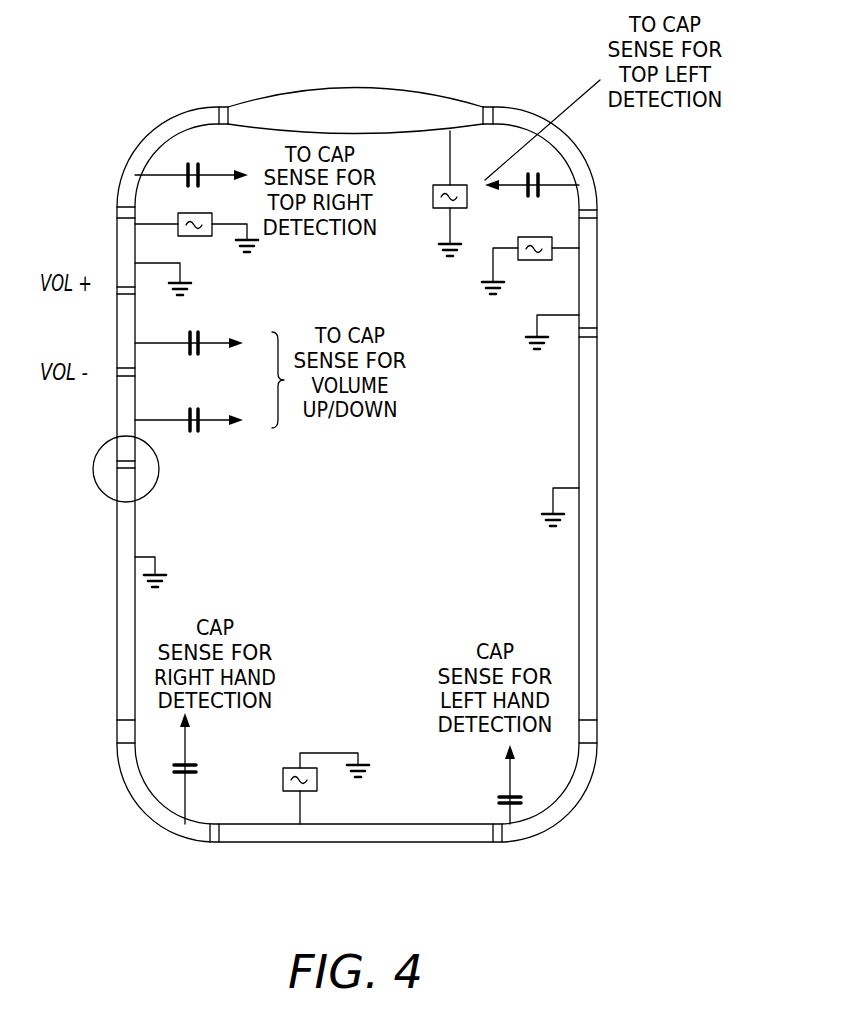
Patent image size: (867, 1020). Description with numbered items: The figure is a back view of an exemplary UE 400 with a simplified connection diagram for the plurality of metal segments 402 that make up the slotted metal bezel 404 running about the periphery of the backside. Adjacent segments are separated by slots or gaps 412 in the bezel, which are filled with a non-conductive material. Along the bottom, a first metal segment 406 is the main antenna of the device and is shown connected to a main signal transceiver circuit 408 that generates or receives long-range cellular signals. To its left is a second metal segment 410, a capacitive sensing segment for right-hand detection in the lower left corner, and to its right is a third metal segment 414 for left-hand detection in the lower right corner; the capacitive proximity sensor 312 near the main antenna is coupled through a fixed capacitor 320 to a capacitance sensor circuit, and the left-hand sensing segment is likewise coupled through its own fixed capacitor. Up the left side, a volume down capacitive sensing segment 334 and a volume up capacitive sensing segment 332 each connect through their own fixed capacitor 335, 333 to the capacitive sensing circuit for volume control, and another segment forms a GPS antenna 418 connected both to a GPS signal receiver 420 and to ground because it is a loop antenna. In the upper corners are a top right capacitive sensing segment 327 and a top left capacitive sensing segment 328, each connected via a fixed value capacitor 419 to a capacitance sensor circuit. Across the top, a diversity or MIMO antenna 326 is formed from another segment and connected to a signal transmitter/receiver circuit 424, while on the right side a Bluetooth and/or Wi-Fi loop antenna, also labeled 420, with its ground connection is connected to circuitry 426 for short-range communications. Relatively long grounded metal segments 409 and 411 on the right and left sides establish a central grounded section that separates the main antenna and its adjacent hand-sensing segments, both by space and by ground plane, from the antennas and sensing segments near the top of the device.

The UE 400 is at (695, 178).
The diversity antenna or MIMO antenna 326 is at (402, 100).
The top right capacitive sensing segment 327 is at (173, 127).
The top left capacitive sensing segment 328 is at (522, 123).
The fixed value capacitor 419 is at (192, 163).
The GPS signal receiver 420 is at (183, 212).
The GPS antenna 418 is at (116, 238).
The volume up capacitive sensing segment 332 is at (118, 308).
The fixed capacitor 333 is at (200, 331).
The volume down capacitive sensing segment 334 is at (125, 418).
The fixed capacitor 335 is at (200, 408).
The slot or gap 412 is at (95, 478).
The grounded metal segment 411 is at (128, 556).
The metal segments 402 is at (120, 631).
The second metal segment 410 is at (146, 793).
The capacitive proximity sensor 312 is at (190, 765).
The main signal transceiver circuit 408 is at (283, 783).
The first metal segment 406 is at (370, 835).
The fixed capacitor 320 is at (520, 807).
The third metal segment 414 is at (565, 800).
The metal bezel 404 is at (588, 537).
The grounded metal segment 409 is at (588, 488).
The circuitry 426 is at (528, 262).
The signal transmitter/receiver circuit 424 is at (446, 185).